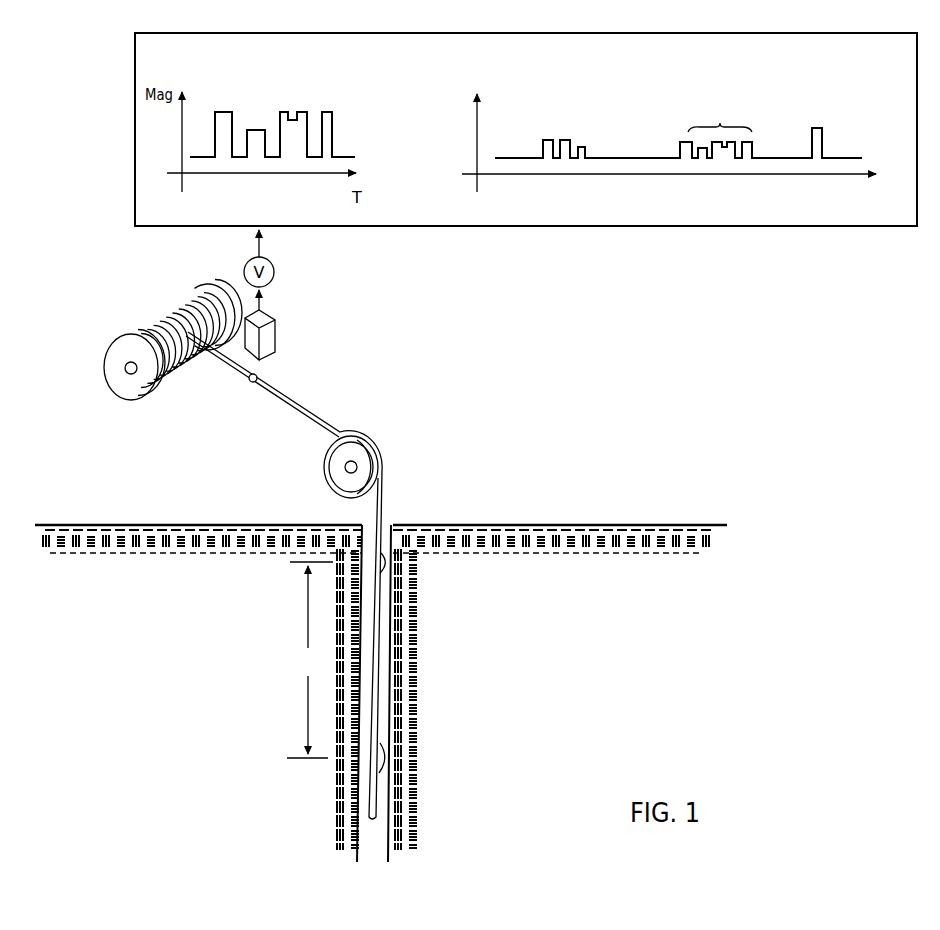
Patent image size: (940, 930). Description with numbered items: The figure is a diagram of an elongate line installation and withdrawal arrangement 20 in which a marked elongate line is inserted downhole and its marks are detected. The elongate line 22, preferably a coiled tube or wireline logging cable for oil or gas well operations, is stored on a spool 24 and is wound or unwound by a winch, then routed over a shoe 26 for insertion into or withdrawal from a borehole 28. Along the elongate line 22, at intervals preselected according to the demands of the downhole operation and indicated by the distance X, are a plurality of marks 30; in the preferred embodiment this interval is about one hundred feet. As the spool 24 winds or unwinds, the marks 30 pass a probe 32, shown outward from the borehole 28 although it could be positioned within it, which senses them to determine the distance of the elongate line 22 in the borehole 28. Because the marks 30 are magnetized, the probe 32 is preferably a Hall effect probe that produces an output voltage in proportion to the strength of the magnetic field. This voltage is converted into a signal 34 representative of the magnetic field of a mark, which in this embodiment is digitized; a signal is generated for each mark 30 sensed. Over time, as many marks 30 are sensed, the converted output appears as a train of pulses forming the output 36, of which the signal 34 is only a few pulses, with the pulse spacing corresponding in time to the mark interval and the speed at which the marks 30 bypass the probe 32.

The elongate line installation and withdrawal arrangement 20 is at (450, 384).
The elongate line 22 is at (377, 668).
The spool 24 is at (131, 392).
The shoe 26 is at (320, 472).
The borehole 28 is at (388, 527).
The marks 30 is at (262, 393).
The probe 32 is at (276, 336).
The signal 34 is at (351, 120).
The output 36 is at (628, 129).